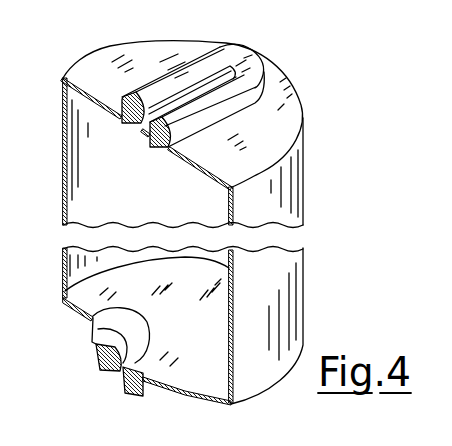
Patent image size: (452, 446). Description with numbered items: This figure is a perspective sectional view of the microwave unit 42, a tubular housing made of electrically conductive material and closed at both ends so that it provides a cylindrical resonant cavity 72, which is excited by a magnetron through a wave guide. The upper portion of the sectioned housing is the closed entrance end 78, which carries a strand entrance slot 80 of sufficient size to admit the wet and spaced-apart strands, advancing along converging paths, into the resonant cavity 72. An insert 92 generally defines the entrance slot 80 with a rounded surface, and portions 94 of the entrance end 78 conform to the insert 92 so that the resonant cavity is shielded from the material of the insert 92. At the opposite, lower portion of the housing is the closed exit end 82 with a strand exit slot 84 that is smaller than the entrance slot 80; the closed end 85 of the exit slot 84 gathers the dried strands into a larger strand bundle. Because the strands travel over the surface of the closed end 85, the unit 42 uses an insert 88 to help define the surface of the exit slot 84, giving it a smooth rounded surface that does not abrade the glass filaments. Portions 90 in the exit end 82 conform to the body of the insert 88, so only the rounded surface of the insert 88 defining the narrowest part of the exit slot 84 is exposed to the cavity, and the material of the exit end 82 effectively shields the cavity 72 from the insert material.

The microwave unit 42 is at (275, 61).
The cylindrical resonant cavity 72 is at (160, 203).
The closed entrance end 78 is at (128, 58).
The strand entrance slot 80 is at (206, 93).
The insert 92 is at (224, 56).
The portions of the entrance end 94 is at (157, 136).
The closed exit end 82 is at (95, 296).
The strand exit slot 84 is at (98, 329).
The closed end of the exit slot 85 is at (93, 316).
The insert 88 is at (100, 372).
The portions of the exit end 90 is at (121, 377).